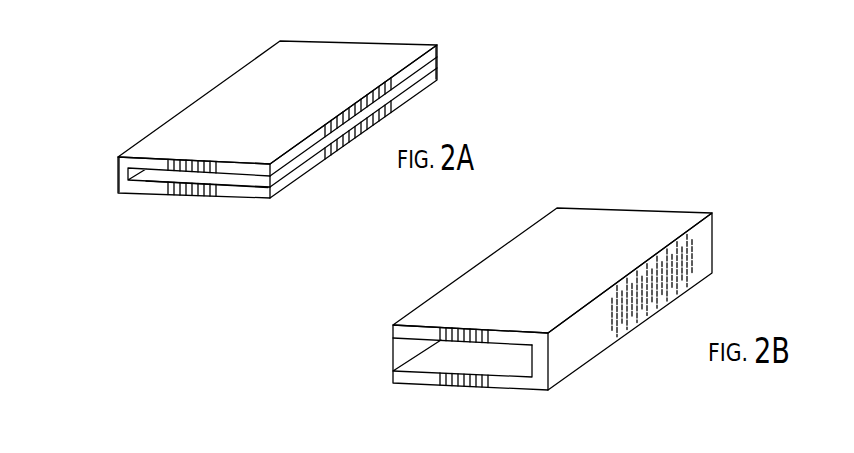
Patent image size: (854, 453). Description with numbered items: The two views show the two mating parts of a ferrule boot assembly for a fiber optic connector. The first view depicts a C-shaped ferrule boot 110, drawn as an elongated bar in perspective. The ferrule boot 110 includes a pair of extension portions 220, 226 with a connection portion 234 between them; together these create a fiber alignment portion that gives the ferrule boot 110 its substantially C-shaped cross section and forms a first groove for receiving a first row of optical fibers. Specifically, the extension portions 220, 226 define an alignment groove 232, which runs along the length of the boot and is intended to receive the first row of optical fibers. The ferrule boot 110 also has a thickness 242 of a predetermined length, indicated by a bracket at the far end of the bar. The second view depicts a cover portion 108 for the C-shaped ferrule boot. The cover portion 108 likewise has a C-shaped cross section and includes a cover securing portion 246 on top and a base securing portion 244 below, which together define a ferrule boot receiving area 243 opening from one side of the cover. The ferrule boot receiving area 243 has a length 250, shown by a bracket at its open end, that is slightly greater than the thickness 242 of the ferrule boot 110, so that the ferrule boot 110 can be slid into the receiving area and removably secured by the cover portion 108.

In FIG. 2B, the cover portion 108 is at (726, 201).
In FIG. 2A, the C-shaped ferrule boot 110 is at (162, 97).
In FIG. 2A, the extension portion 220 is at (138, 202).
In FIG. 2A, the extension portion 226 is at (227, 163).
In FIG. 2A, the alignment groove 232 is at (242, 184).
In FIG. 2A, the connection portion 234 is at (103, 175).
In FIG. 2A, the thickness 242 is at (441, 45).
In FIG. 2B, the ferrule boot receiving area 243 is at (440, 357).
In FIG. 2B, the base securing portion 244 is at (519, 400).
In FIG. 2B, the cover securing portion 246 is at (445, 306).
In FIG. 2B, the length 250 is at (391, 340).